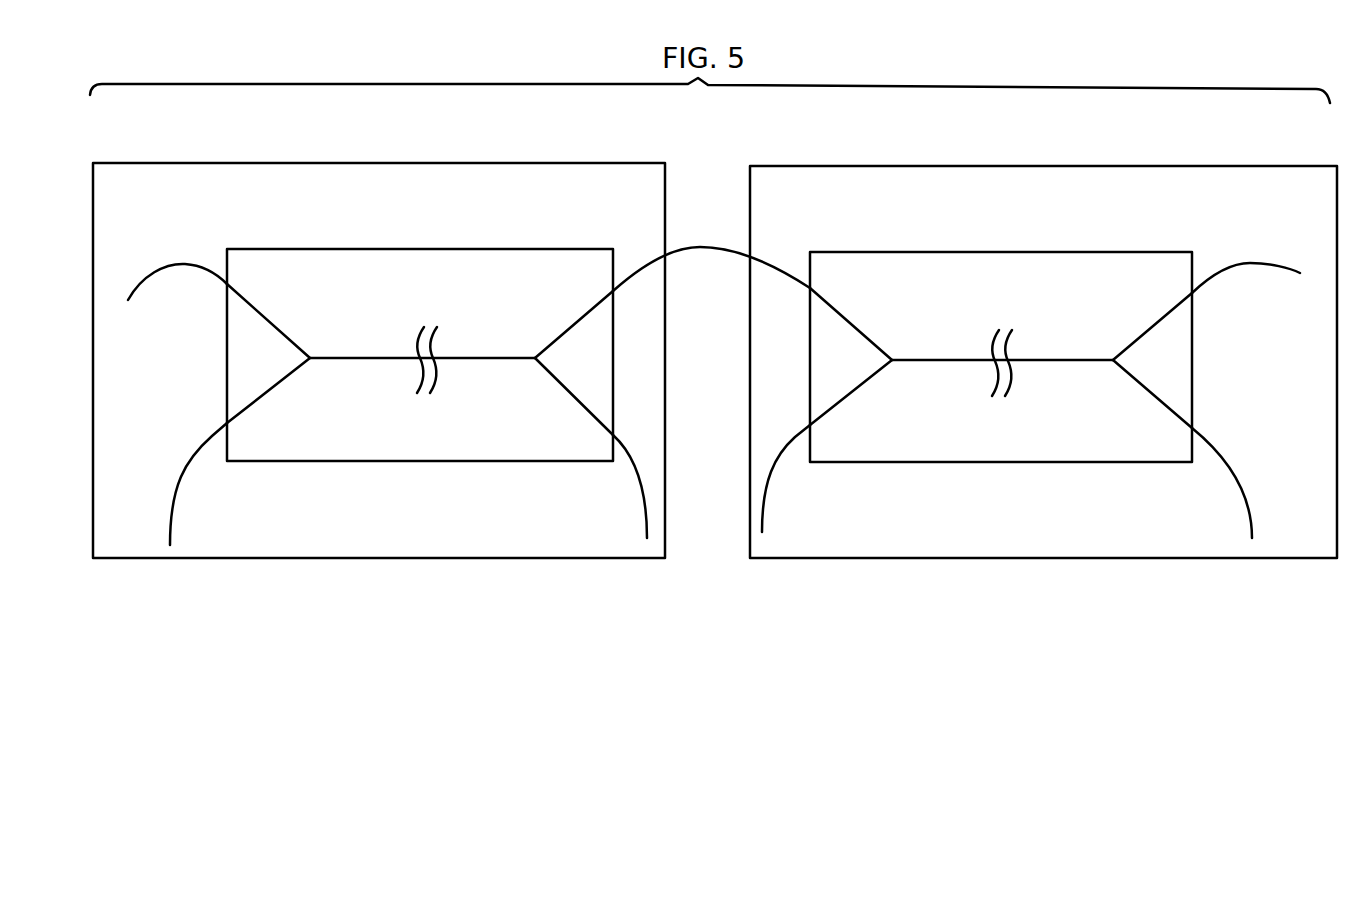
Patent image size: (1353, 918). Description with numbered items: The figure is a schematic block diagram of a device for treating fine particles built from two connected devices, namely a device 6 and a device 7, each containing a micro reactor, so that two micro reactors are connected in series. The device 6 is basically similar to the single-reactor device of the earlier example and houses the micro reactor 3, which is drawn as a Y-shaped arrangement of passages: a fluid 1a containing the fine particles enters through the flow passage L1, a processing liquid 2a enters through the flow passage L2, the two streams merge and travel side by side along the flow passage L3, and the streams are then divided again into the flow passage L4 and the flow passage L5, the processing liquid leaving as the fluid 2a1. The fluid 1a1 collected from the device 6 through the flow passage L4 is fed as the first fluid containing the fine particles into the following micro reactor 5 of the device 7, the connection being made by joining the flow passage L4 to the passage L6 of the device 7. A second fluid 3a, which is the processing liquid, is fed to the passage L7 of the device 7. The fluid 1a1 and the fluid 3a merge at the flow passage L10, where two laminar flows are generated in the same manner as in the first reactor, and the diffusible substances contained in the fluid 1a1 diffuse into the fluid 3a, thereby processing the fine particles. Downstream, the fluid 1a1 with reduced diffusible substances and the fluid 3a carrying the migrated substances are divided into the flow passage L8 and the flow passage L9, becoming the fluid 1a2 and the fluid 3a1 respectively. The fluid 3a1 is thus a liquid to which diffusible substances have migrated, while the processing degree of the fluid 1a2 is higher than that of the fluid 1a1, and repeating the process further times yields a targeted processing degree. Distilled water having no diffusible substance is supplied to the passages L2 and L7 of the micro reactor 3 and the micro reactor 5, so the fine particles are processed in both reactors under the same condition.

The device 6 is at (450, 163).
The device 7 is at (1078, 166).
The micro reactor 3 is at (432, 249).
The micro reactor 5 is at (927, 252).
The fluid 1a is at (177, 259).
The fluid 1a1 is at (711, 269).
The fluid 1a2 is at (1254, 259).
The fluid 2a is at (200, 484).
The fluid 2a1 is at (606, 486).
The second fluid 3a is at (788, 482).
The fluid 3a1 is at (1262, 483).
The flow passage L1 is at (270, 318).
The flow passage L2 is at (270, 393).
The flow passage L3 is at (395, 348).
The flow passage L4 is at (572, 318).
The flow passage L5 is at (562, 383).
The flow passage L6 is at (838, 309).
The flow passage L7 is at (838, 400).
The flow passage L8 is at (1140, 330).
The flow passage L9 is at (1132, 380).
The flow passage L10 is at (975, 358).